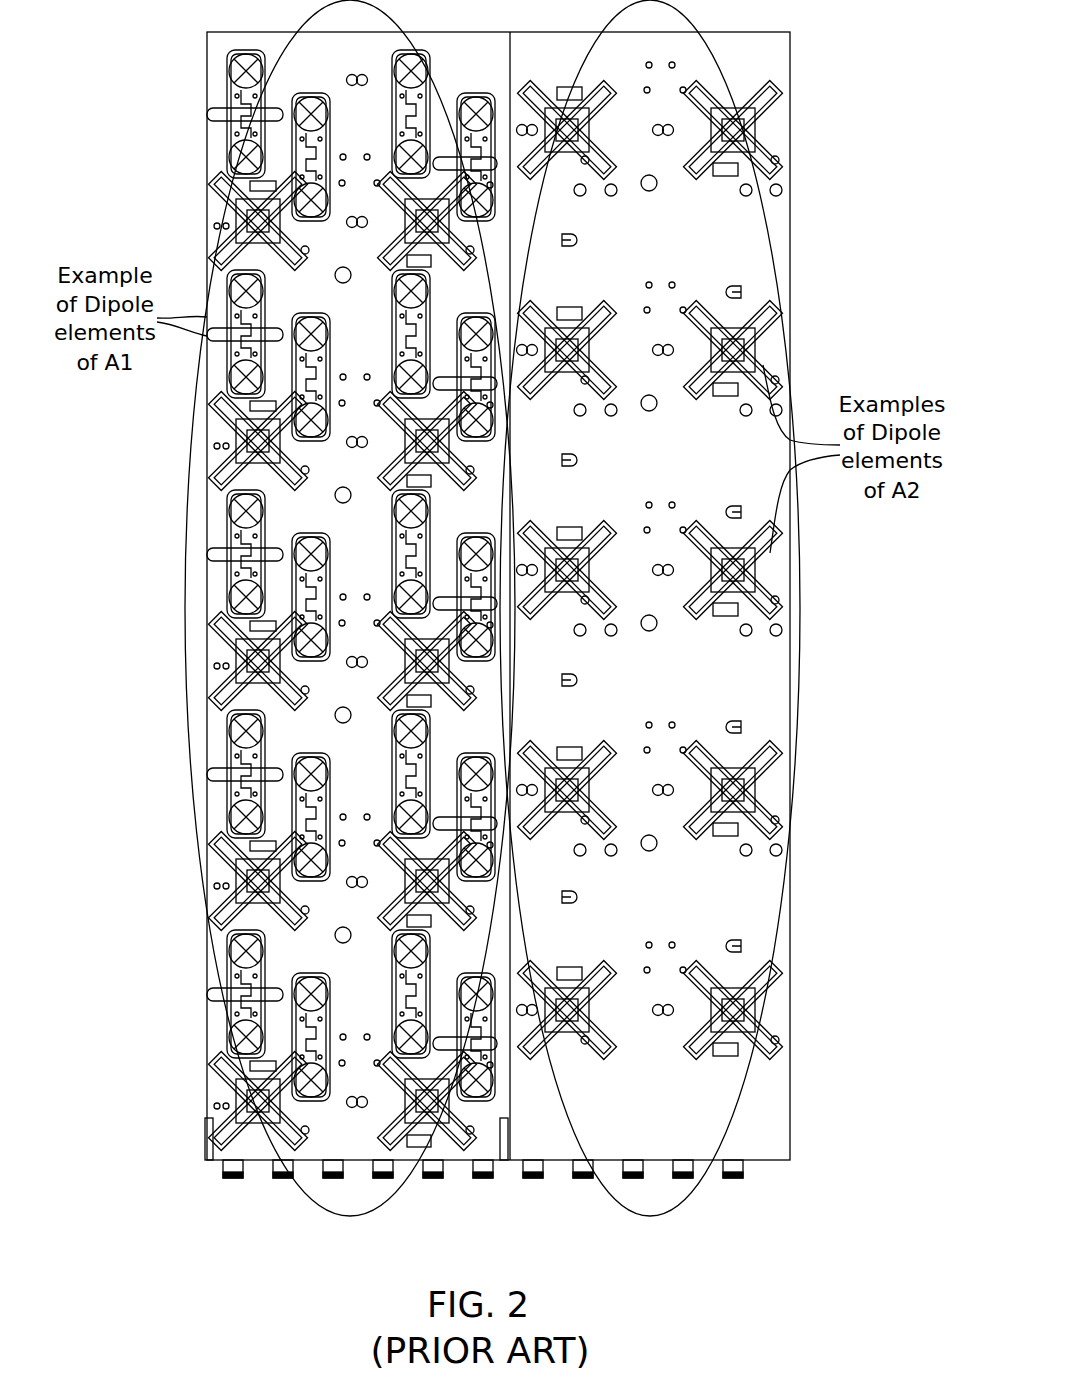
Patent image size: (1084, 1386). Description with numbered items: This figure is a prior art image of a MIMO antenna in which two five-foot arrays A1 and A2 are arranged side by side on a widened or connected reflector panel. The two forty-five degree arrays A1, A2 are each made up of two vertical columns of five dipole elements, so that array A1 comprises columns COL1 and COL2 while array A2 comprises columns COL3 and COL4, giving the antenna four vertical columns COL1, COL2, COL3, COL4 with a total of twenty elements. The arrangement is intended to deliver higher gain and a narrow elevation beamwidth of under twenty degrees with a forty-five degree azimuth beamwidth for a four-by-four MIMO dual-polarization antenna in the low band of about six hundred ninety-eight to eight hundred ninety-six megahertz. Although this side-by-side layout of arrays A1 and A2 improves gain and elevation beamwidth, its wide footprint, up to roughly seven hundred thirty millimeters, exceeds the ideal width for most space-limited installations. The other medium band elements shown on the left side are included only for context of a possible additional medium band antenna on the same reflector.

The array A1 is at (190, 572).
The array A2 is at (800, 605).
The column 1 of dipole elements COL1 is at (293, 647).
The column 2 of dipole elements COL2 is at (437, 647).
The column 3 of dipole elements COL3 is at (602, 653).
The column 4 of dipole elements COL4 is at (718, 662).